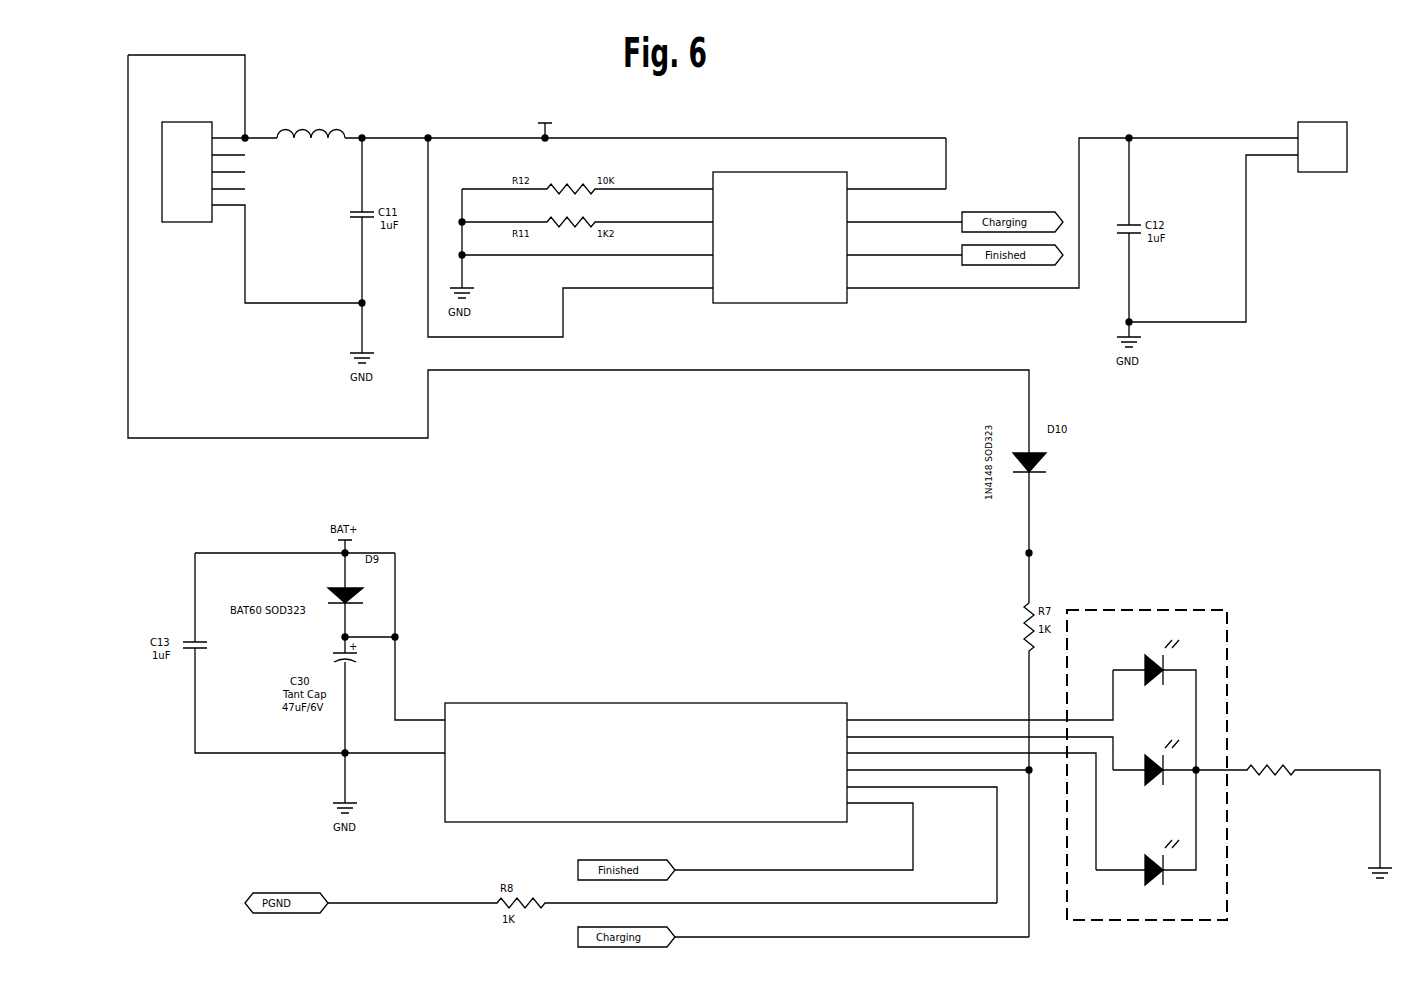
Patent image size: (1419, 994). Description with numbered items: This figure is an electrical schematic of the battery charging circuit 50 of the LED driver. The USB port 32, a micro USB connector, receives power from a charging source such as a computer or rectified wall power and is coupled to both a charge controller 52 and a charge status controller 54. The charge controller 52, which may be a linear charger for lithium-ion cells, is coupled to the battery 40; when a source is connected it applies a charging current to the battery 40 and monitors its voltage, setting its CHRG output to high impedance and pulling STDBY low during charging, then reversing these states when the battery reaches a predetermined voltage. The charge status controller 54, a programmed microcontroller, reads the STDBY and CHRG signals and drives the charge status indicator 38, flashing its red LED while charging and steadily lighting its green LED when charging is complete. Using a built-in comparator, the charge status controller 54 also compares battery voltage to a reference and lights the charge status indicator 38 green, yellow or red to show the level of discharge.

The battery charging circuit 50 is at (478, 92).
The USB port 32 is at (200, 223).
The charge controller 52 is at (801, 172).
The battery 40 is at (1333, 122).
The charge status controller 54 is at (542, 703).
The charge status indicator 38 is at (1138, 610).